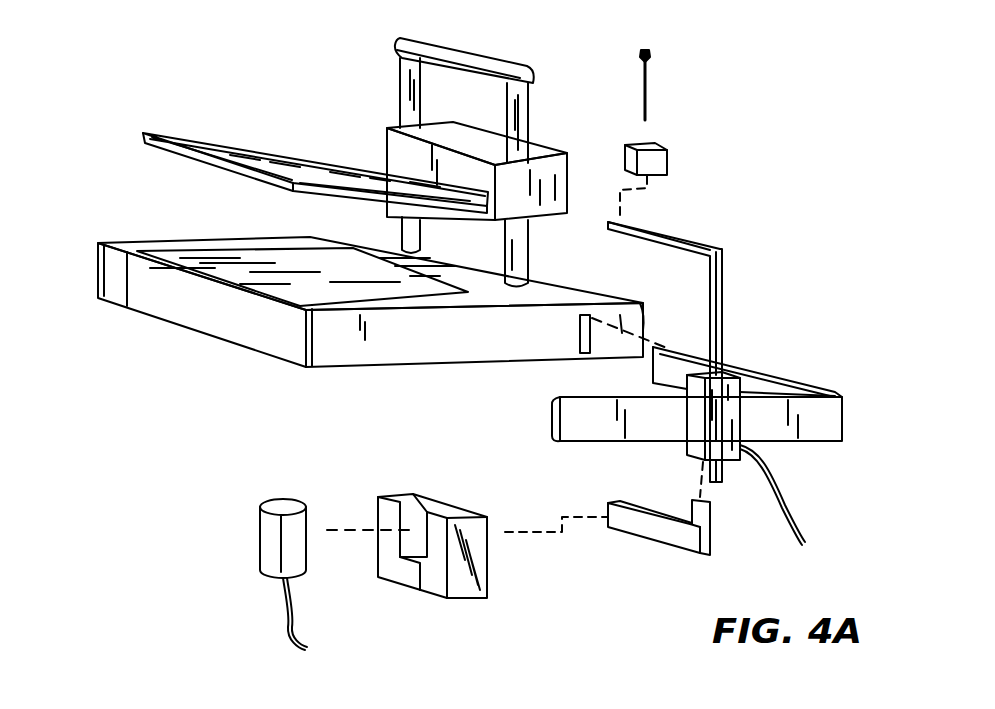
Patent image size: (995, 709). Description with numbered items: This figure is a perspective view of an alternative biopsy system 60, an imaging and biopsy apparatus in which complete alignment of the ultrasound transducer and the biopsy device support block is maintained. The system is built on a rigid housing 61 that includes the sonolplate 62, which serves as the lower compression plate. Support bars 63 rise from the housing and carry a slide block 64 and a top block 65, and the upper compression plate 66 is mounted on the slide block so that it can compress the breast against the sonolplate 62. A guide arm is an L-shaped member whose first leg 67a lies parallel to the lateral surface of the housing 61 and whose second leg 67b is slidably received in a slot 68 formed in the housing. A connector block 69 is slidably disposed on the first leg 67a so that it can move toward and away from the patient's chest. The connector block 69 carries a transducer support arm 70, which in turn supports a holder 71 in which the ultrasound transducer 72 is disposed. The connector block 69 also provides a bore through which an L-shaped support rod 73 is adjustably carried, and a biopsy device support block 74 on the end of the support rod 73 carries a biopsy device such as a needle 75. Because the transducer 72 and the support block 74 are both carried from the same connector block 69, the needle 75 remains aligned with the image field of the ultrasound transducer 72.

The biopsy system 60 is at (745, 76).
The rigid housing 61 is at (237, 318).
The sonolplate 62 is at (309, 293).
The support bars 63 is at (402, 87).
The slide block 64 is at (387, 147).
The top block 65 is at (475, 55).
The upper compression plate 66 is at (192, 137).
The first leg 67a is at (552, 420).
The second leg 67b is at (787, 370).
The slot 68 is at (580, 338).
The connector block 69 is at (728, 412).
The transducer support arm 70 is at (658, 530).
The holder 71 is at (477, 543).
The ultrasound transducer 72 is at (260, 530).
The L-shaped support rod 73 is at (722, 272).
The biopsy device support block 74 is at (668, 163).
The needle 75 is at (652, 75).